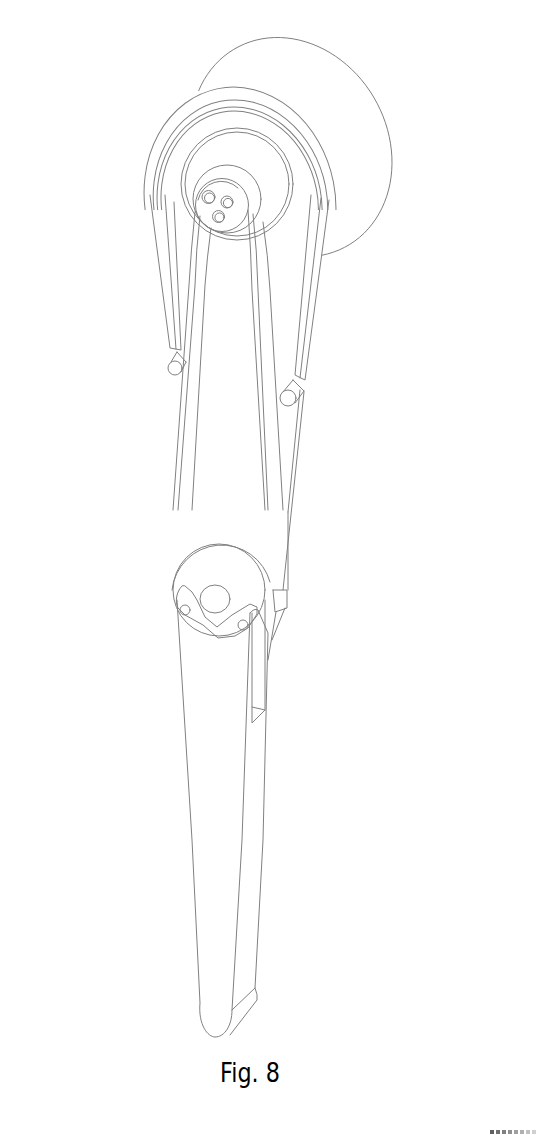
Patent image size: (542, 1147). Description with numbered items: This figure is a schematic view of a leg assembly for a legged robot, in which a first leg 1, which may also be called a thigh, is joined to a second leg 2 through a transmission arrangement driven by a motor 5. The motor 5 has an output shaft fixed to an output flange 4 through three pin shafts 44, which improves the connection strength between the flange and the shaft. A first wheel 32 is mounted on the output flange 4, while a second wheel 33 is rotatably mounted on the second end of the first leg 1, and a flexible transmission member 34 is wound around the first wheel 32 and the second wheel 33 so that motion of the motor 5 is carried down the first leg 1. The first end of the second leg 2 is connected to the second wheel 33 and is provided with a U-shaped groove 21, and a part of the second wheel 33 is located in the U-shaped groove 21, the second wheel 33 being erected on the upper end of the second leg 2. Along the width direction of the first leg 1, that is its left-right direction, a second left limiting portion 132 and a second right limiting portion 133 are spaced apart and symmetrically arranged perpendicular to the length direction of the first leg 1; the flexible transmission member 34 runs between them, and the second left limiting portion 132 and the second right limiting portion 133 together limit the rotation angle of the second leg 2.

The first leg 1 is at (293, 442).
The second leg 2 is at (235, 940).
The output flange 4 is at (196, 162).
The motor 5 is at (327, 87).
The U-shaped groove 21 is at (260, 687).
The first wheel 32 is at (208, 213).
The second wheel 33 is at (212, 565).
The flexible transmission member 34 is at (187, 448).
The pin shafts 44 is at (230, 200).
The second left limiting portion 132 is at (170, 368).
The second right limiting portion 133 is at (302, 382).